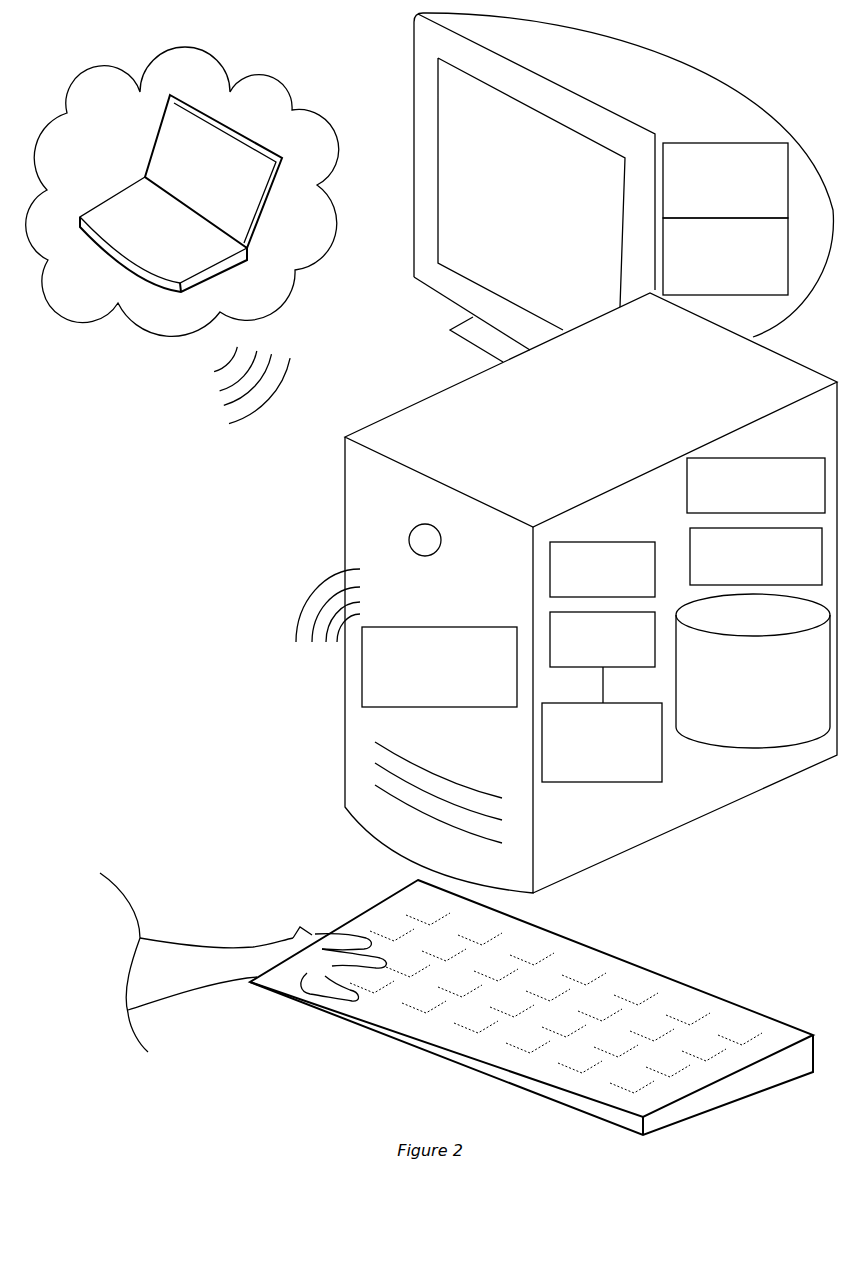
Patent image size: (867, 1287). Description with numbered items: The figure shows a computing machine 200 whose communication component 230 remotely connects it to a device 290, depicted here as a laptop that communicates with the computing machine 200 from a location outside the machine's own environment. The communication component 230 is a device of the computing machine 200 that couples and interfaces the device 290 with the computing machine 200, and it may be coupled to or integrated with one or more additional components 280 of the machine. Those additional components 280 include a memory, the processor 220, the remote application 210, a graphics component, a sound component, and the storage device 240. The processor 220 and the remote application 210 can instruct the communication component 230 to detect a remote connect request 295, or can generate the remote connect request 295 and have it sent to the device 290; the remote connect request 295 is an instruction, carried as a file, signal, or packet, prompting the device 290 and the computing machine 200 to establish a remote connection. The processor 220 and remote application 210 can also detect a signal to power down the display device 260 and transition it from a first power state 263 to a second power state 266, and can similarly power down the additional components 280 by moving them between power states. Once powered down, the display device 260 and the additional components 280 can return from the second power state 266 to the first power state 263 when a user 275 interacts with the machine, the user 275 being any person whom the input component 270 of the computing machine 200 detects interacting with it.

The computing machine 200 is at (634, 331).
The remote application 210 is at (588, 779).
The processor 220 is at (589, 662).
The communication component 230 is at (426, 702).
The storage device 240 is at (739, 692).
The display device 260 is at (519, 225).
The first power state 263 is at (711, 214).
The second power state 266 is at (711, 290).
The input component 270 is at (656, 952).
The user 275 is at (157, 1048).
The additional components 280 is at (650, 448).
The device 290 is at (193, 196).
The remote connect request 295 is at (109, 436).